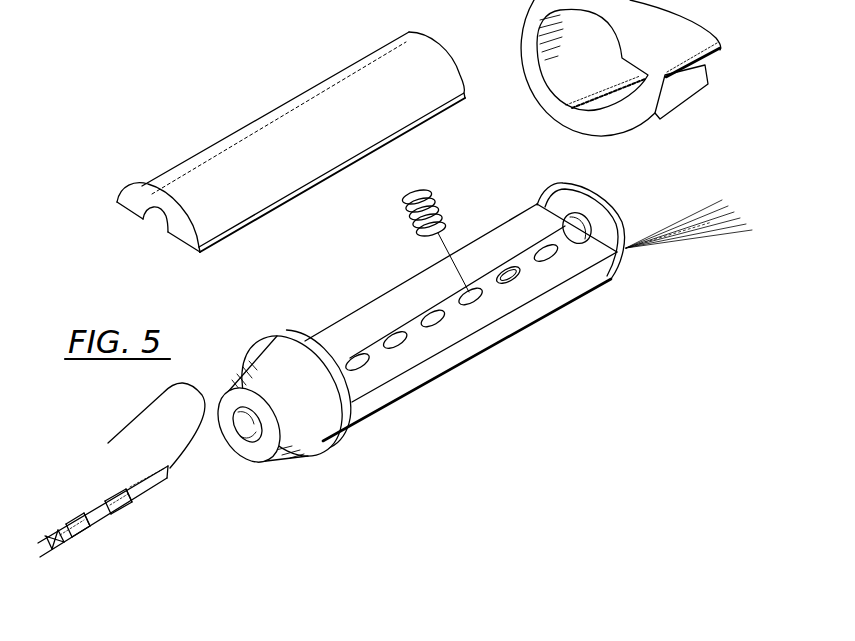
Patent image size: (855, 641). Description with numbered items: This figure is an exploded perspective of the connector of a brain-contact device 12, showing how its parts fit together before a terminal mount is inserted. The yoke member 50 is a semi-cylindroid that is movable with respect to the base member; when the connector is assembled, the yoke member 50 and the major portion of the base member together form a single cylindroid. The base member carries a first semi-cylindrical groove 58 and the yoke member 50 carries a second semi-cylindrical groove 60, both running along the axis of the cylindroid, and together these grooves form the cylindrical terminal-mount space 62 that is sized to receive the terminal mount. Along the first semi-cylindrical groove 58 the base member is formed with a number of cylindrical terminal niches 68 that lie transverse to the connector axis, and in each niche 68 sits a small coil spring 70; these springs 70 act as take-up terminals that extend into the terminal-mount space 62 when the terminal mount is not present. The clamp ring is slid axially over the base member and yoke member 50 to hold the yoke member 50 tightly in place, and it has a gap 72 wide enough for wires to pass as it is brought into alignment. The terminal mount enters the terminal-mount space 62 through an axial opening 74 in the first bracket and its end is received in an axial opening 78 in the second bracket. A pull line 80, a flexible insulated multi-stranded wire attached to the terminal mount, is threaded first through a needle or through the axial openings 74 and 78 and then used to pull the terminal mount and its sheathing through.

The connector assembly 12 is at (114, 7).
The yoke member 50 is at (291, 160).
The first semi-cylindrical groove 58 is at (378, 350).
The second semi-cylindrical groove 60 is at (166, 222).
The terminal-mount space 62 is at (173, 248).
The terminal niches 68 is at (515, 276).
The coil spring 70 is at (436, 212).
The gap 72 is at (680, 84).
The axial opening 74 is at (247, 425).
The axial opening 78 is at (572, 223).
The pull line 80 is at (133, 424).